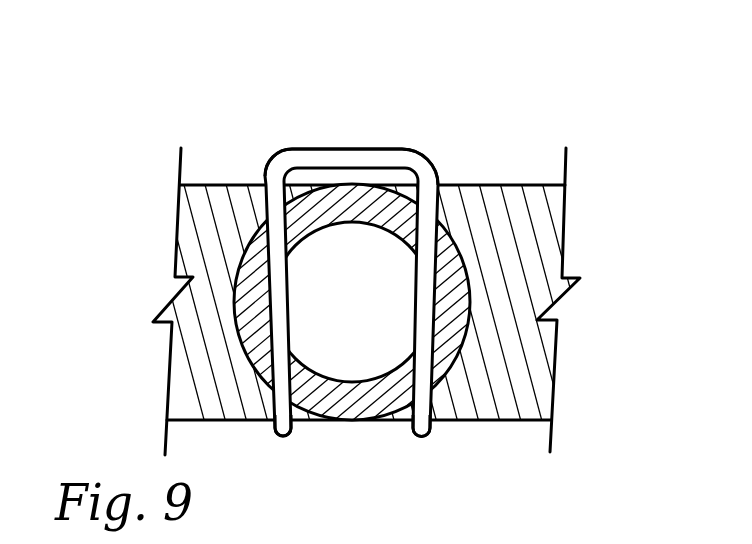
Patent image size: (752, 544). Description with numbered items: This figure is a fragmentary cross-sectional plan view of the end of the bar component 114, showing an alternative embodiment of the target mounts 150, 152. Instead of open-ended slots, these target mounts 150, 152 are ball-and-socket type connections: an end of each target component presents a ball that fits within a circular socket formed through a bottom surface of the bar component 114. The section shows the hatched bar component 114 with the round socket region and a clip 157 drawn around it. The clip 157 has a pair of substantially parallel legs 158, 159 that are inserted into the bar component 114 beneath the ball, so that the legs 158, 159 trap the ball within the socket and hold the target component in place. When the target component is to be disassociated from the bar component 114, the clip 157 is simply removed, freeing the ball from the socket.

The bar component 114 is at (232, 190).
The target mount 150 is at (408, 242).
The target mount 152 is at (351, 293).
The clip 157 is at (326, 150).
The leg 158 is at (289, 437).
The leg 159 is at (412, 433).